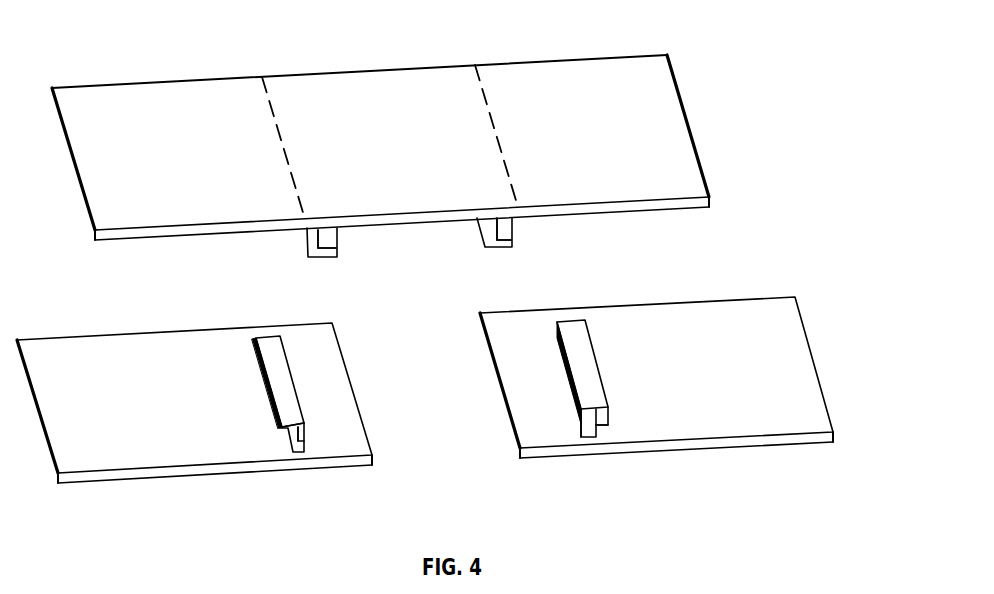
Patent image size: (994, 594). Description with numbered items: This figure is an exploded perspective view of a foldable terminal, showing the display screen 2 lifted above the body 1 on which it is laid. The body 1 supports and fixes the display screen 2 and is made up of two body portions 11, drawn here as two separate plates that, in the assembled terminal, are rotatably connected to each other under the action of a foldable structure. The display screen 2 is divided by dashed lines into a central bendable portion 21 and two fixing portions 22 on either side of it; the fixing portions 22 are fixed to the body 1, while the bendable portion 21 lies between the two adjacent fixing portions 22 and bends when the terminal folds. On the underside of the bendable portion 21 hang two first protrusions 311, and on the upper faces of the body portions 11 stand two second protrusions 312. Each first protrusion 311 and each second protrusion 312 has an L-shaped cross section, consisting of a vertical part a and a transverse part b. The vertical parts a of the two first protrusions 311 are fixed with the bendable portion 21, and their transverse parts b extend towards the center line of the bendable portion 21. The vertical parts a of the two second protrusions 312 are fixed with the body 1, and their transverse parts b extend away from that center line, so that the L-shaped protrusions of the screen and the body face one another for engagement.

The body 1 is at (858, 351).
The display screen 2 is at (712, 119).
The body portion 11 is at (150, 452).
The bendable portion 21 is at (362, 88).
The fixing portion 22 is at (135, 100).
The first protrusion 311 is at (354, 249).
The second protrusion 312 is at (236, 378).
The vertical part a is at (306, 241).
The transverse part b is at (324, 258).